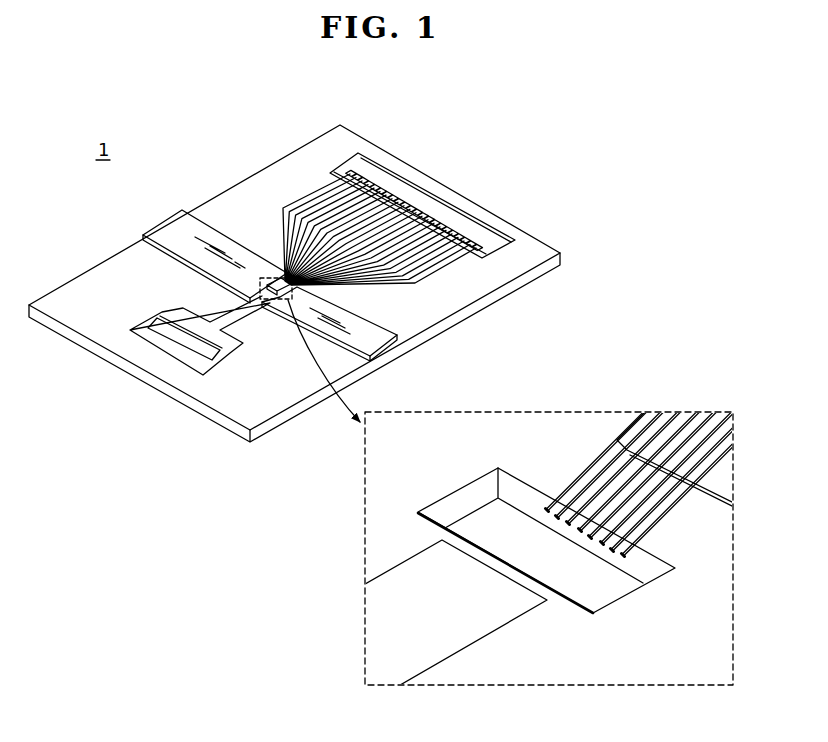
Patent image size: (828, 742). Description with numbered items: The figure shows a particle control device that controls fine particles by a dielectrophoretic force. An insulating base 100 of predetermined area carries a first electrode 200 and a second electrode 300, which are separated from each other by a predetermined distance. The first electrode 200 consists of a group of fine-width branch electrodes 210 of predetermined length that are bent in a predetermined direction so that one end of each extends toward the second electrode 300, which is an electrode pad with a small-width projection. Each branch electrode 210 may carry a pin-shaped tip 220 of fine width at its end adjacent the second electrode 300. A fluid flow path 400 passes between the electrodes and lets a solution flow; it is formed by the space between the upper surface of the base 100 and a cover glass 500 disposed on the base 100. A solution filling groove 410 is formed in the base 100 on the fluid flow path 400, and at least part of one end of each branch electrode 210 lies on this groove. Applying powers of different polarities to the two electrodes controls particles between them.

The base 100 is at (548, 250).
The first electrode 200 is at (320, 183).
The branch electrodes 210 is at (479, 247).
The tip 220 is at (565, 471).
The second electrode 300 is at (176, 308).
The fluid flow path 400 is at (207, 240).
The solution filling groove 410 is at (483, 516).
The cover glass 500 is at (394, 330).